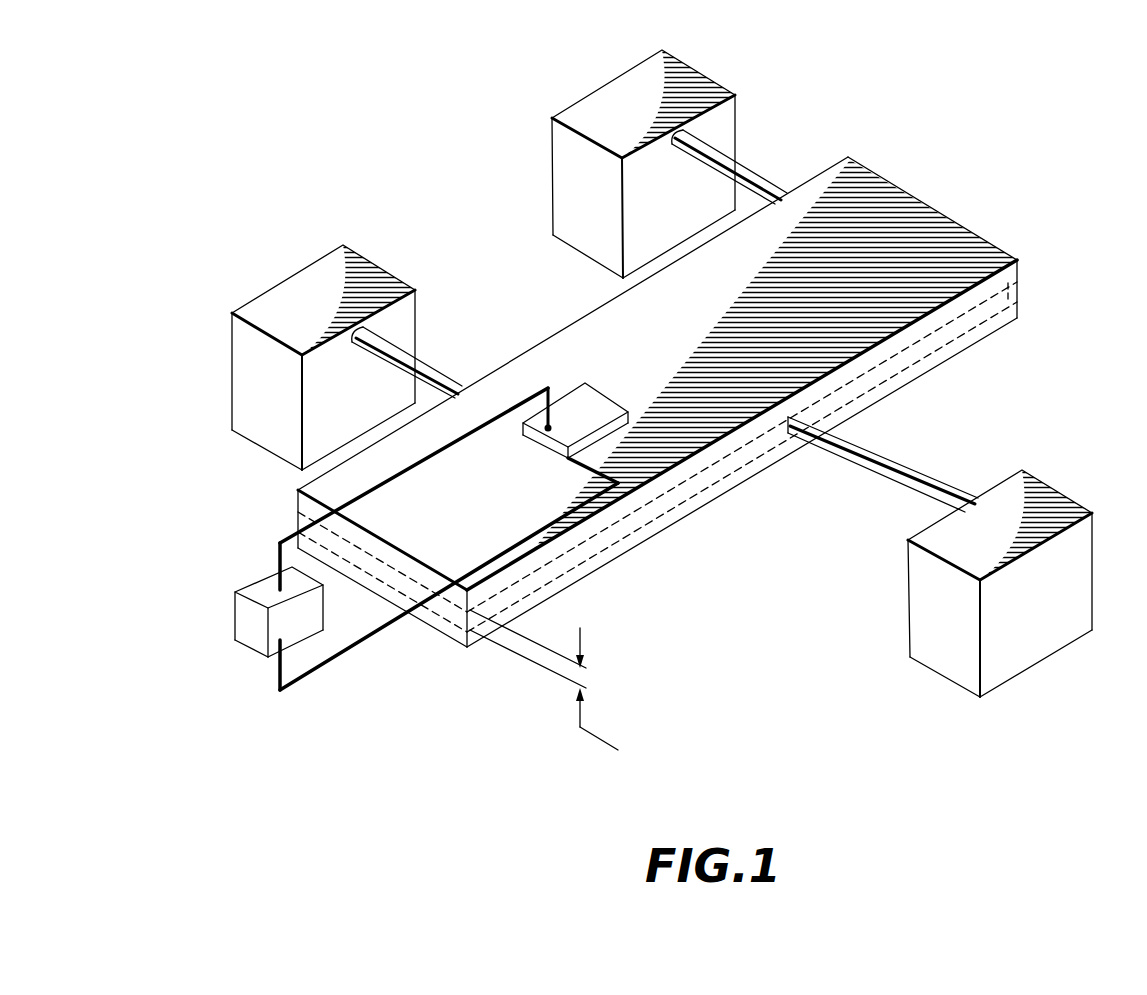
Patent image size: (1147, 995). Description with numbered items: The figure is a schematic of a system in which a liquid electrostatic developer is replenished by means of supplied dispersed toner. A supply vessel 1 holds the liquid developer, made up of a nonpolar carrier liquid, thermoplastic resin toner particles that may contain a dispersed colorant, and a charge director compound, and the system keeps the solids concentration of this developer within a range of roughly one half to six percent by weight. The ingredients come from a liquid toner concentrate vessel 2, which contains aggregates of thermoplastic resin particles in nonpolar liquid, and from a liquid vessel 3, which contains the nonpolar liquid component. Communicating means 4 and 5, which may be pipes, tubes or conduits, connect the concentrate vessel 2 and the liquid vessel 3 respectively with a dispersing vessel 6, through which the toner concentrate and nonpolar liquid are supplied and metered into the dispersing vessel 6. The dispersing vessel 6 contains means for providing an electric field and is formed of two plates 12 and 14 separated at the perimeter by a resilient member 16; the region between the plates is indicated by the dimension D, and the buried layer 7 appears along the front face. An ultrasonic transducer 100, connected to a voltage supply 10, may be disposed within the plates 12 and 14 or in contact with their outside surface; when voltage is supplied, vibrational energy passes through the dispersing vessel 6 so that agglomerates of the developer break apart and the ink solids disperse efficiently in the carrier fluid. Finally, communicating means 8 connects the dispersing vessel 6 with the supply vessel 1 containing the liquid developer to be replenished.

The supply vessel 1 is at (1075, 507).
The liquid toner concentrate vessel 2 is at (720, 92).
The liquid vessel 3 is at (360, 265).
The communicating means 4 is at (762, 187).
The communicating means 5 is at (442, 380).
The dispersing vessel 6 is at (987, 186).
The buried layer 7 is at (662, 508).
The communicating means 8 is at (933, 490).
The voltage supply 10 is at (290, 645).
The plate 12 is at (422, 568).
The plate 14 is at (447, 623).
The resilient member 16 is at (403, 583).
The ultrasonic transducer 100 is at (577, 403).
The layer thickness dimension D is at (556, 691).